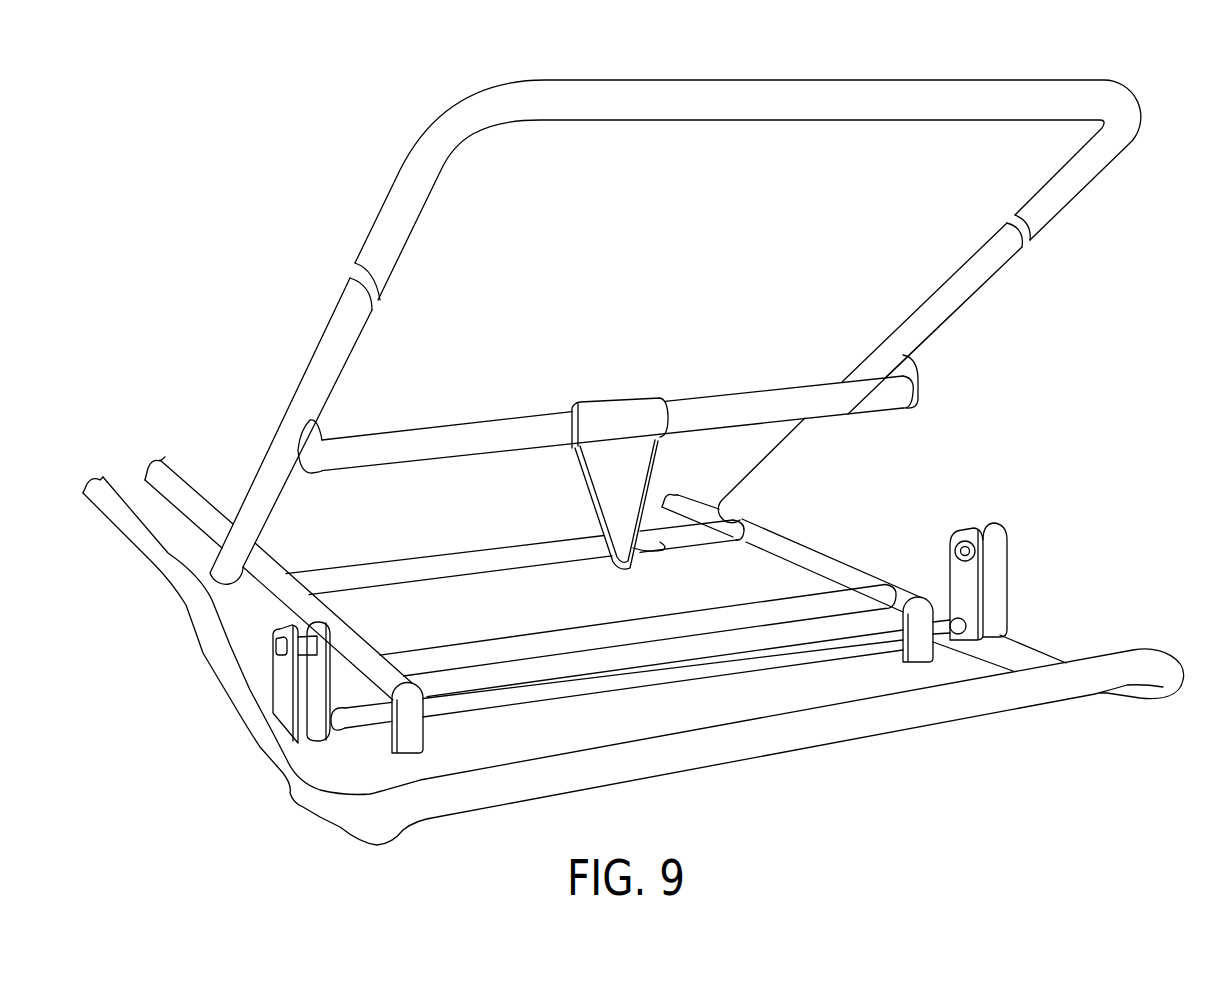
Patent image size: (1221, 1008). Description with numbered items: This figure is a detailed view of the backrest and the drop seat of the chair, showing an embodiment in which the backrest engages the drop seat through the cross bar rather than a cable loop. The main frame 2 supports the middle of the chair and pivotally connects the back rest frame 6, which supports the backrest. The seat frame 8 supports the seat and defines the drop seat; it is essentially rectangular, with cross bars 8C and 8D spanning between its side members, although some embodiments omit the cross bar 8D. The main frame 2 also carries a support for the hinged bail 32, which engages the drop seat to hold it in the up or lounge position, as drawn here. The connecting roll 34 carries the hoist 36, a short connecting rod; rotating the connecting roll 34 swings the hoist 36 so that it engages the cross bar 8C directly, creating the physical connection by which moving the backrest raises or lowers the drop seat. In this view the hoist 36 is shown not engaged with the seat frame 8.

The main frame 2 is at (1133, 662).
The back rest frame 6 is at (1117, 138).
The seat frame 8 is at (817, 540).
The cross bar 8C is at (575, 630).
The cross bar 8D is at (533, 550).
The hinged bail 32 is at (493, 702).
The connecting roll 34 is at (883, 400).
The hoist 36 is at (618, 483).